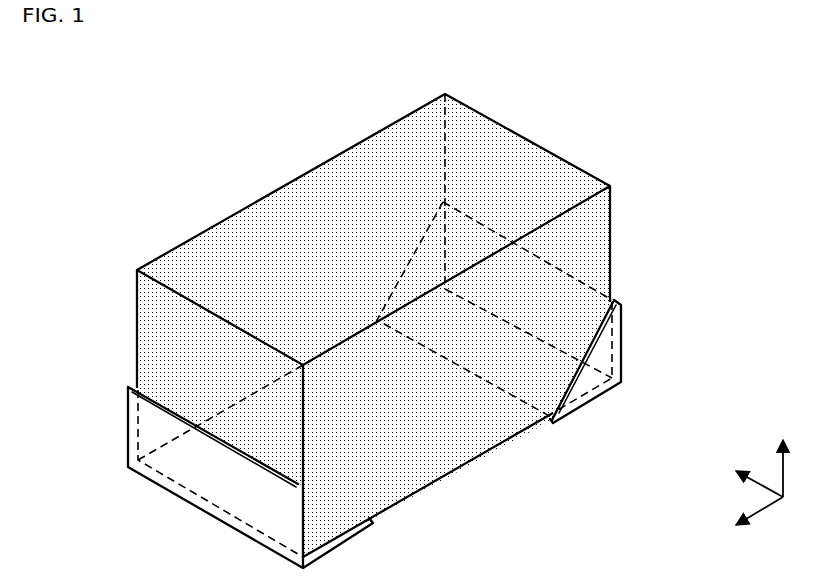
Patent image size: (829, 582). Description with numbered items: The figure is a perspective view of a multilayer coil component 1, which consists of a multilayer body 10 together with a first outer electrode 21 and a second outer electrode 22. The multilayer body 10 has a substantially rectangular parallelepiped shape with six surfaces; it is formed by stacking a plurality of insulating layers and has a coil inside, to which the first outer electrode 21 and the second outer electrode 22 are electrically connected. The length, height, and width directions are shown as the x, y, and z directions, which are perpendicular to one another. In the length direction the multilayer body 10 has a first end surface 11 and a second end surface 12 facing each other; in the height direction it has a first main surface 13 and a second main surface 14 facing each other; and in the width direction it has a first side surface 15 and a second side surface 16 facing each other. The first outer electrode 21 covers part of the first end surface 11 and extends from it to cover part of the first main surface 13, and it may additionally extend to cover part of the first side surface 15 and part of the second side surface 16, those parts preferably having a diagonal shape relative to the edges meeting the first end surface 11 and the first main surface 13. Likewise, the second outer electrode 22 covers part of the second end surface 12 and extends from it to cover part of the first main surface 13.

The multilayer coil component 1 is at (98, 148).
The multilayer body 10 is at (285, 170).
The first end surface 11 is at (155, 325).
The second end surface 12 is at (527, 165).
The first main surface 13 is at (390, 470).
The second main surface 14 is at (247, 243).
The first side surface 15 is at (470, 392).
The second side surface 16 is at (390, 175).
The first outer electrode 21 is at (200, 480).
The second outer electrode 22 is at (617, 347).